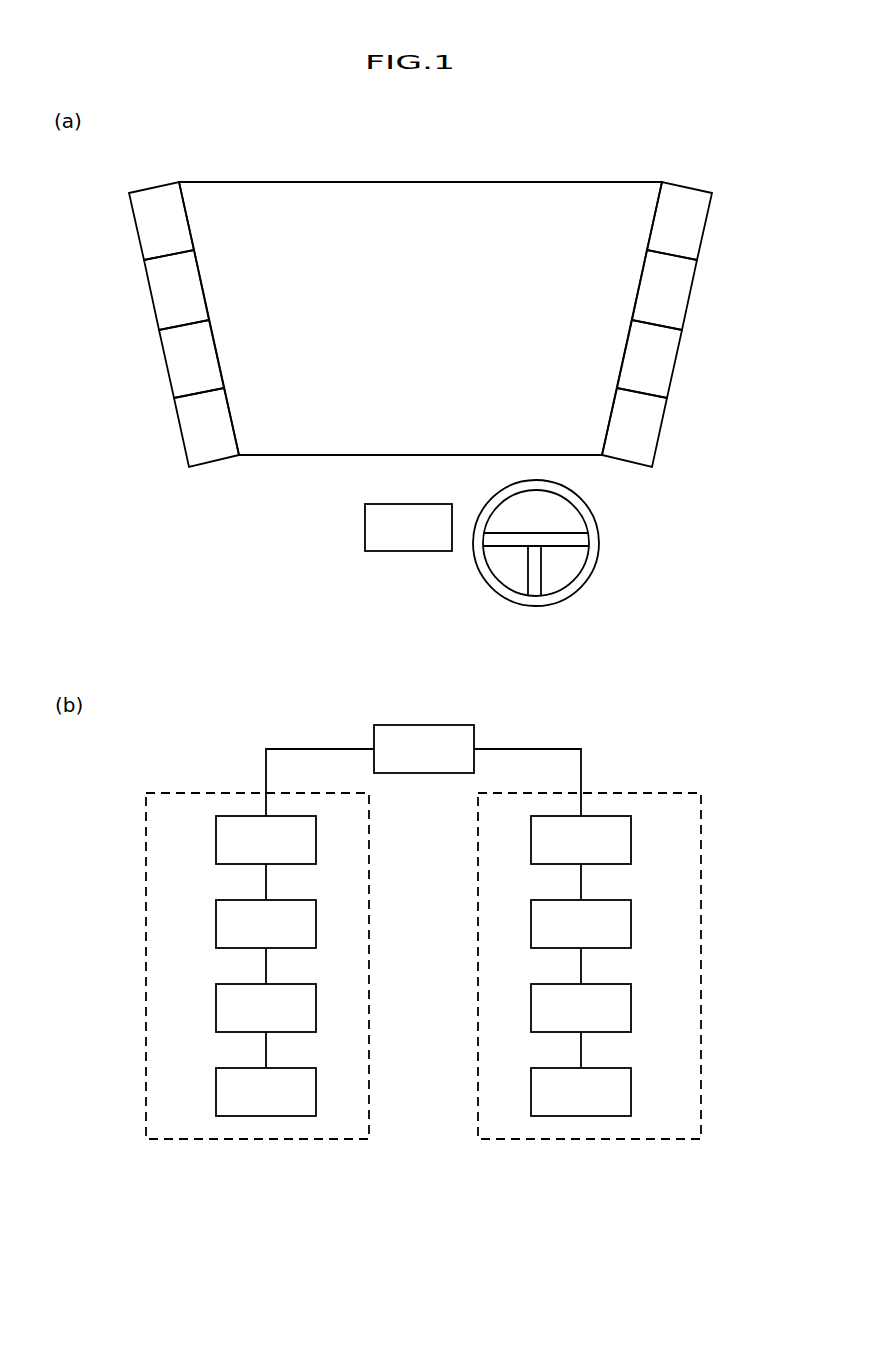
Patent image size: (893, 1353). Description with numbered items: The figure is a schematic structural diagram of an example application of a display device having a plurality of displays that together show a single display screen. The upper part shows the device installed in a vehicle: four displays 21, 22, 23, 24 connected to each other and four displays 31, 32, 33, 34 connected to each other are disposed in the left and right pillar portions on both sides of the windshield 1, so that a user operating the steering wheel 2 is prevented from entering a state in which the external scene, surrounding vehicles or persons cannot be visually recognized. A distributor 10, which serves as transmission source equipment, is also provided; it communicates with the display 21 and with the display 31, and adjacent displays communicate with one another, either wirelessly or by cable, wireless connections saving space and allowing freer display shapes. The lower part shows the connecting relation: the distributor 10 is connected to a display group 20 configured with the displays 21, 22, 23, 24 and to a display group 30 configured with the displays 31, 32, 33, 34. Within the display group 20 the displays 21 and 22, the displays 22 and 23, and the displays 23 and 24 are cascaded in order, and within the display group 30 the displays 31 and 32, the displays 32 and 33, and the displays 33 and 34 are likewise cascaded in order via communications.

The windshield 1 is at (558, 181).
The steering wheel 2 is at (598, 558).
The distributor (transmission source equipment) 10 is at (412, 553).
The display group 20 is at (328, 1140).
The display group 30 is at (658, 1140).
The display 21 is at (216, 842).
The display 22 is at (216, 926).
The display 23 is at (216, 1010).
The display 24 is at (216, 1094).
The display 31 is at (631, 842).
The display 32 is at (631, 926).
The display 33 is at (631, 1010).
The display 34 is at (631, 1094).